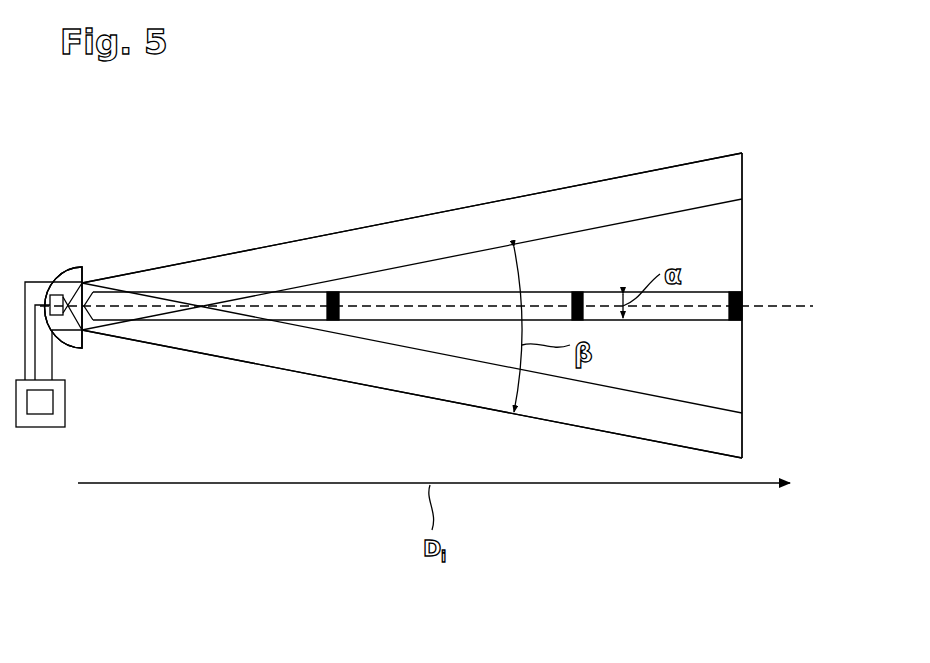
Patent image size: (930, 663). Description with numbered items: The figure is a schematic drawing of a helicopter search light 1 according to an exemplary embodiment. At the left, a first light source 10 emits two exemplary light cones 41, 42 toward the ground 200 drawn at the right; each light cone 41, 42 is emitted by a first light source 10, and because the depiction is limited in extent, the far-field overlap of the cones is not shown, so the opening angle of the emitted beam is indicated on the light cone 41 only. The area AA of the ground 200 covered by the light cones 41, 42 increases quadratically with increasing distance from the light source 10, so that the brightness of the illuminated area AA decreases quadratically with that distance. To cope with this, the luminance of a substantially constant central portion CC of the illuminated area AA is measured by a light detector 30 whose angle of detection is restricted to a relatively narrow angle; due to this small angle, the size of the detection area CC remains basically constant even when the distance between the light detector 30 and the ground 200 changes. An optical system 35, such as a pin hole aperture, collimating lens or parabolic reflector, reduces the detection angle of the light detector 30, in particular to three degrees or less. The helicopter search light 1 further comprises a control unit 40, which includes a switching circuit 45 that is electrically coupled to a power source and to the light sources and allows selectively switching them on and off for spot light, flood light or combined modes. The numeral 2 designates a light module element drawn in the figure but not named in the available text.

The helicopter search light 1 is at (354, 155).
The light module 2 is at (76, 249).
The first light source 10 is at (88, 268).
The light detector 30 is at (45, 274).
The optical system 35 is at (58, 292).
The control unit 40 is at (59, 445).
The light cone 41 is at (192, 374).
The light cone 42 is at (192, 236).
The switching circuit 45 is at (37, 406).
The ground 200 is at (742, 385).
The illuminated area AA is at (754, 211).
The central portion CC is at (754, 296).